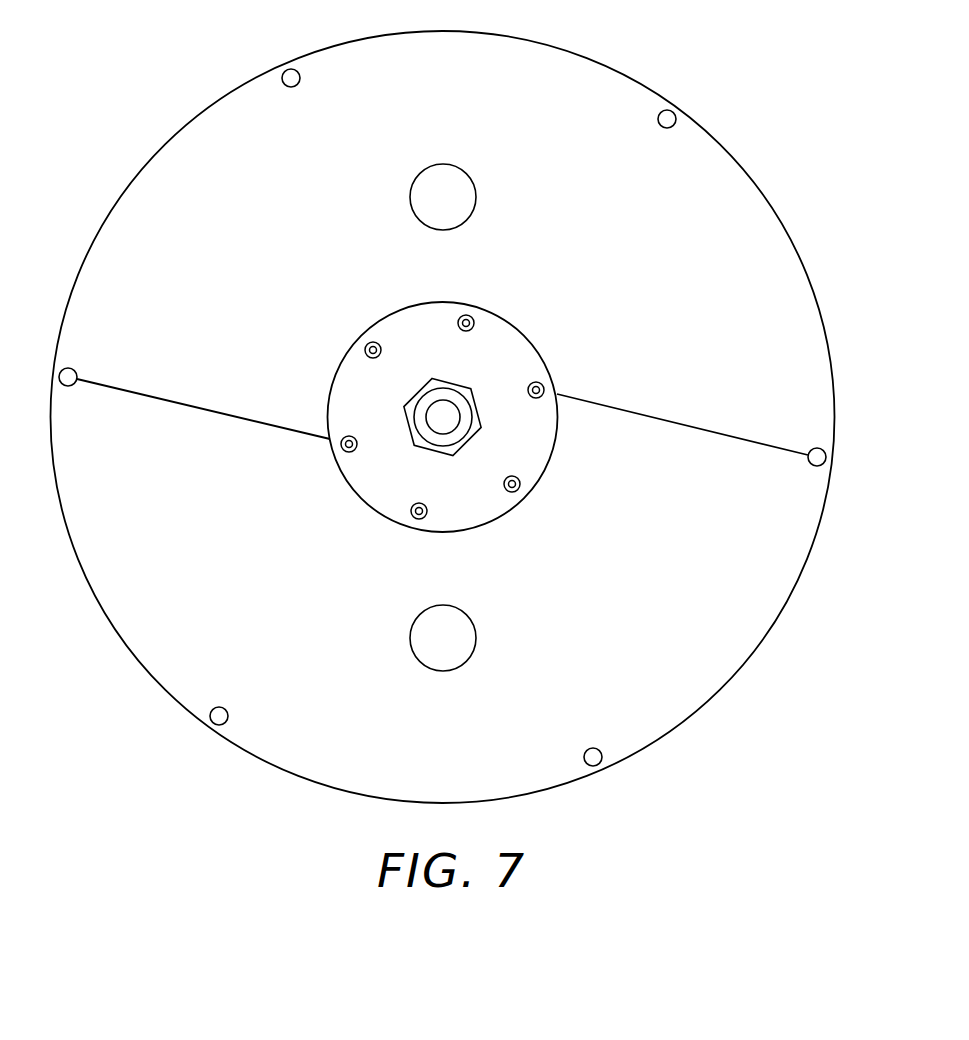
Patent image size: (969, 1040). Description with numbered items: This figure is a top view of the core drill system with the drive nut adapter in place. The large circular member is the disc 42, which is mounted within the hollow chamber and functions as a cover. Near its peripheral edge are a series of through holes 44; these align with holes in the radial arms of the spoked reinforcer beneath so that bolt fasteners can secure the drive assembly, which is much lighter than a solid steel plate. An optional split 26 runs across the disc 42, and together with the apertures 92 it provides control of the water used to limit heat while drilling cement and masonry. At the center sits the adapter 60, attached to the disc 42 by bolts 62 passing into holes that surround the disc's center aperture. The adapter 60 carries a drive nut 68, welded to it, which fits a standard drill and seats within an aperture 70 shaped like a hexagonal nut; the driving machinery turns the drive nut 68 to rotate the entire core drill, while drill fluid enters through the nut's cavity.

The disc 42 is at (619, 71).
The through holes 44 is at (287, 69).
The split 26 is at (191, 399).
The apertures 92 is at (428, 168).
The adapter 60 is at (516, 328).
The bolts 62 is at (381, 342).
The drive nut 68 is at (468, 424).
The aperture 70 is at (425, 446).